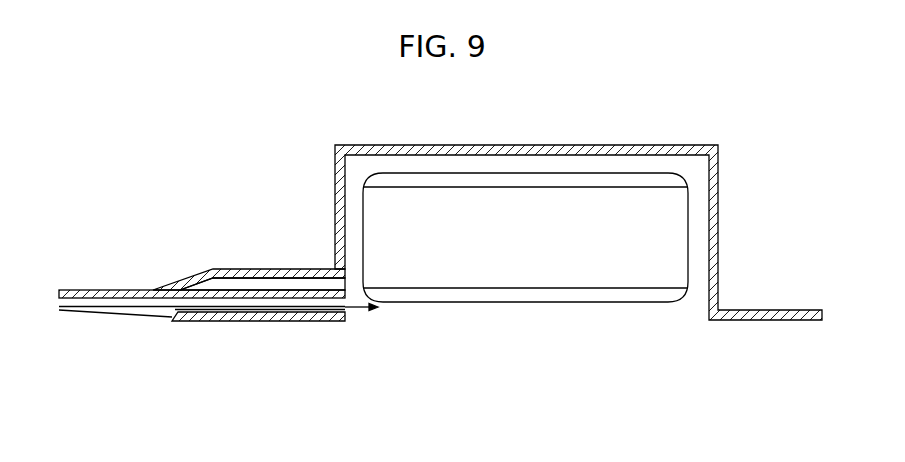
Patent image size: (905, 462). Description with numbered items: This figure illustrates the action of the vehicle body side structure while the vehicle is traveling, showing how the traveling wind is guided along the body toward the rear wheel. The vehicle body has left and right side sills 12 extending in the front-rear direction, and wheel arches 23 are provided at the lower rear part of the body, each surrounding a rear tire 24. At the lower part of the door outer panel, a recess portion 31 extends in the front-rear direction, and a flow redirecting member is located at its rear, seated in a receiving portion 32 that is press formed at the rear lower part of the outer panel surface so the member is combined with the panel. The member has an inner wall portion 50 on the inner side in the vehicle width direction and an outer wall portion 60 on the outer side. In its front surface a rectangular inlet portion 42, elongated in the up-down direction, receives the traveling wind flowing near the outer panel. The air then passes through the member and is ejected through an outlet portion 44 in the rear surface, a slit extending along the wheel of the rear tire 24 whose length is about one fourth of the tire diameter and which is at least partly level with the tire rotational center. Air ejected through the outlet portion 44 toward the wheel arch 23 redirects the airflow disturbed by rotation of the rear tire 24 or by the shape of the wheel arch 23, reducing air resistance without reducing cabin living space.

The side sill 12 is at (110, 311).
The wheel arch 23 is at (722, 217).
The rear tire 24 is at (514, 313).
The recess portion 31 is at (101, 289).
The receiving portion 32 is at (298, 269).
The inlet portion 42 is at (166, 313).
The outlet portion 44 is at (349, 313).
The inner wall portion 50 is at (243, 277).
The outer wall portion 60 is at (247, 322).